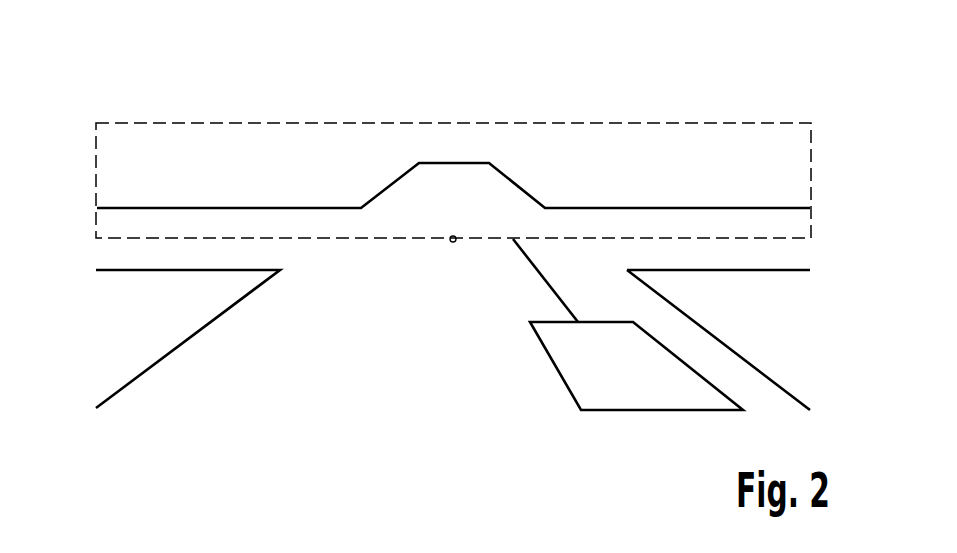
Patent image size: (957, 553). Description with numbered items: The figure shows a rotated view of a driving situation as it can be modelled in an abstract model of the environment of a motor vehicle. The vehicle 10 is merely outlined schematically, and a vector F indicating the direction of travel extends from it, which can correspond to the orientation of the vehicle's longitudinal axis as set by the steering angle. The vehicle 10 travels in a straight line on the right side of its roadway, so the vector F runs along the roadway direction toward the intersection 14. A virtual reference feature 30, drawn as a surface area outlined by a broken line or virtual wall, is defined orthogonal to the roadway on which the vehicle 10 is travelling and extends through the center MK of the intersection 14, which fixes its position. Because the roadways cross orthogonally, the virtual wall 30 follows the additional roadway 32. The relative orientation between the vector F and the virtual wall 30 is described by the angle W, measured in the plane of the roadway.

The intersection 14 is at (552, 103).
The virtual reference feature 30 is at (727, 123).
The center of the intersection MK is at (451, 236).
The angle W is at (538, 266).
The vector indicating the direction of travel F is at (555, 290).
The additional roadway 32 is at (162, 253).
The vehicle 10 is at (617, 398).